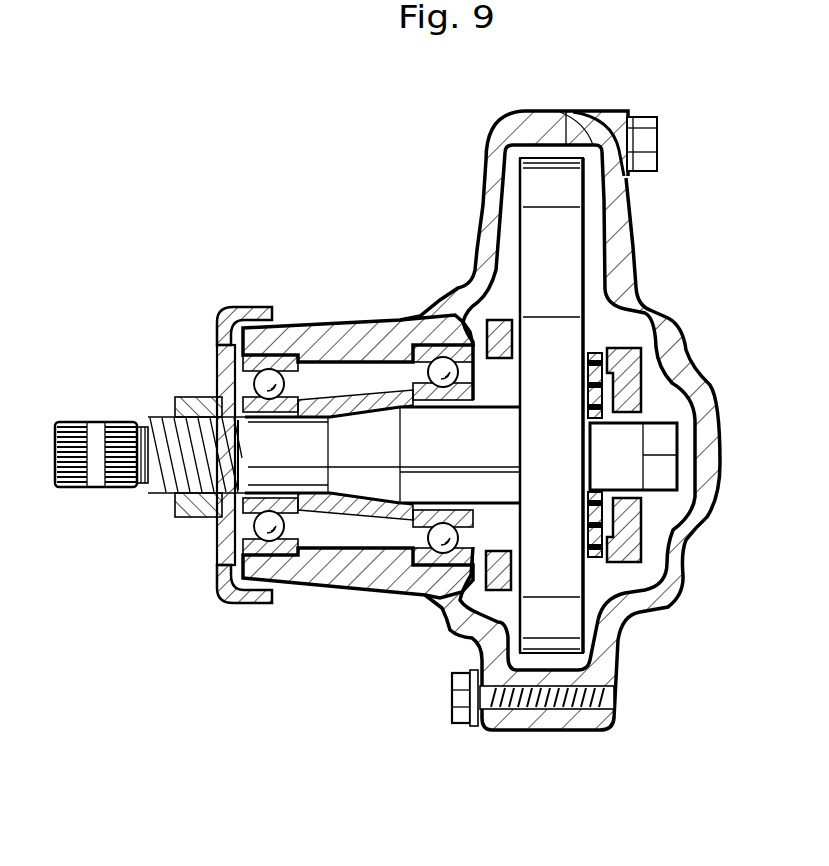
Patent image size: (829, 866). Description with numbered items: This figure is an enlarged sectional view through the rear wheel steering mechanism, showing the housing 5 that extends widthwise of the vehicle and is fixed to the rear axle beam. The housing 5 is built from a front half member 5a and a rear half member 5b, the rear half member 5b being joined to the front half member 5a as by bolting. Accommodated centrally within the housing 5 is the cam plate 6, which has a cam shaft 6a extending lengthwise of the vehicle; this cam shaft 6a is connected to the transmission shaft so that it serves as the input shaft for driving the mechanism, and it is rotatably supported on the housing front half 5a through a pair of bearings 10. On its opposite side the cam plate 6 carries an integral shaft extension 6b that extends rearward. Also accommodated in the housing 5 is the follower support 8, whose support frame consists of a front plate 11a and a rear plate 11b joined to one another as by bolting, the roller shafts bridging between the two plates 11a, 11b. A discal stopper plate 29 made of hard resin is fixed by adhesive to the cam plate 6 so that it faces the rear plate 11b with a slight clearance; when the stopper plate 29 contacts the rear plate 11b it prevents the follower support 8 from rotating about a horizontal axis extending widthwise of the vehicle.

The housing 5 is at (484, 166).
The front half member 5a is at (490, 190).
The rear half member 5b is at (620, 213).
The cam plate 6 is at (567, 253).
The cam shaft 6a is at (363, 480).
The shaft extension 6b is at (630, 448).
The follower support 8 is at (628, 344).
The bearings 10 is at (258, 535).
The front plate 11a is at (497, 355).
The rear plate 11b is at (633, 375).
The stopper plate 29 is at (593, 520).